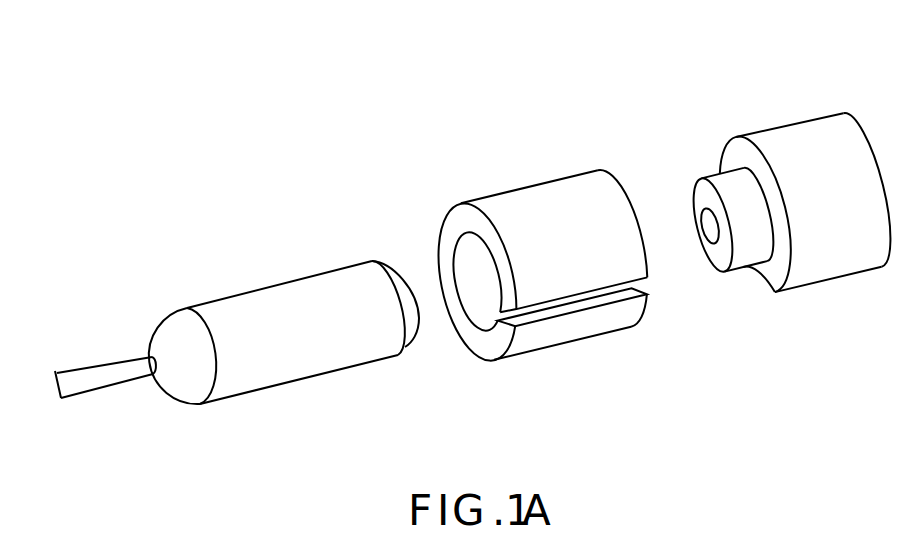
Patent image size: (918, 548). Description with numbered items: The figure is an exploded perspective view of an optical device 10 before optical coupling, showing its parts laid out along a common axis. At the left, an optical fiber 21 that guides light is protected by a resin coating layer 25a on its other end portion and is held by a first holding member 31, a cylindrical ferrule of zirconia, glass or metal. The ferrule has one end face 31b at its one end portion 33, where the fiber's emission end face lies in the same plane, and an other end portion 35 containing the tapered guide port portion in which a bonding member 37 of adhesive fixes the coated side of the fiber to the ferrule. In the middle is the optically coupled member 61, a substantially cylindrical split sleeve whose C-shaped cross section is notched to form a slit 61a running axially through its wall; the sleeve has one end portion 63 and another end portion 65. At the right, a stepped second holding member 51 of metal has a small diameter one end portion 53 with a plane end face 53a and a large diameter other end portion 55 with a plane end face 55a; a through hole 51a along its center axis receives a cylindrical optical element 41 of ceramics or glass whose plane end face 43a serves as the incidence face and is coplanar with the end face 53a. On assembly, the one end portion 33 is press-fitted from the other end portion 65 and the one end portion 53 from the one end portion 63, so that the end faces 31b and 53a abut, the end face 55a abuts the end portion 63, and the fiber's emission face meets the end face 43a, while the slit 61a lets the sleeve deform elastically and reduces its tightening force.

The optical device 10 is at (473, 100).
The optical fiber 21 is at (98, 367).
The coating layer 25a is at (110, 386).
The first holding member 31 is at (282, 282).
The one end face 31b is at (410, 327).
The one end portion 33 is at (382, 343).
The other end portion 35 is at (235, 387).
The bonding member 37 is at (182, 393).
The optical element 41 is at (703, 224).
The one end face 43a is at (700, 218).
The second holding member 51 is at (764, 112).
The through hole 51a is at (720, 237).
The one end portion 53 is at (738, 263).
The one end face 53a is at (710, 258).
The other end portion 55 is at (847, 267).
The one end face 55a is at (773, 285).
The optically coupled member 61 is at (545, 178).
The slit 61a is at (565, 308).
The one end portion 63 is at (592, 182).
The other end portion 65 is at (482, 210).